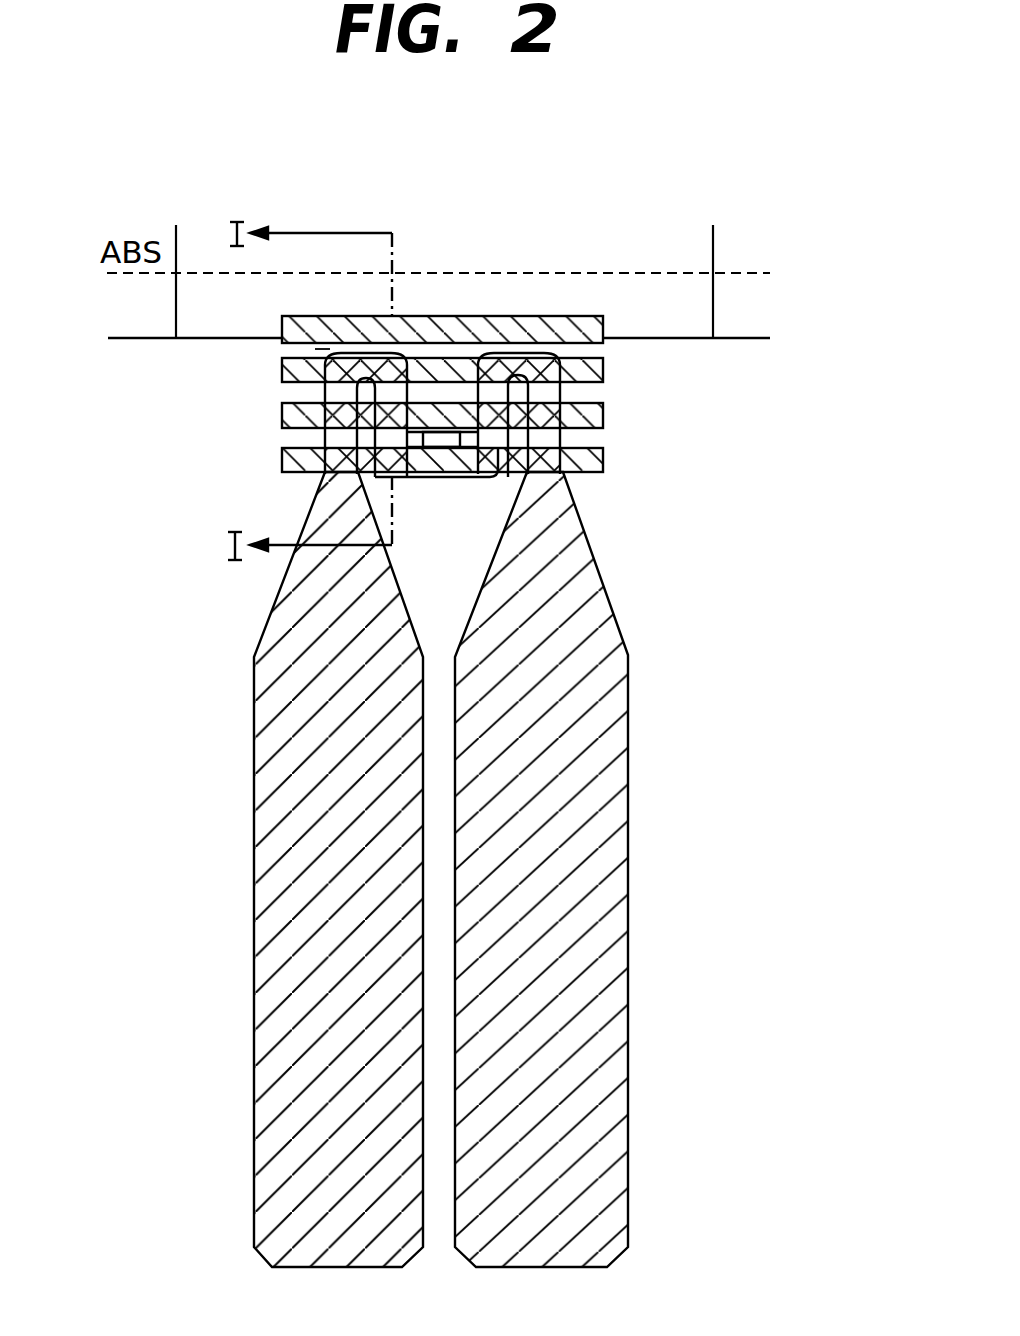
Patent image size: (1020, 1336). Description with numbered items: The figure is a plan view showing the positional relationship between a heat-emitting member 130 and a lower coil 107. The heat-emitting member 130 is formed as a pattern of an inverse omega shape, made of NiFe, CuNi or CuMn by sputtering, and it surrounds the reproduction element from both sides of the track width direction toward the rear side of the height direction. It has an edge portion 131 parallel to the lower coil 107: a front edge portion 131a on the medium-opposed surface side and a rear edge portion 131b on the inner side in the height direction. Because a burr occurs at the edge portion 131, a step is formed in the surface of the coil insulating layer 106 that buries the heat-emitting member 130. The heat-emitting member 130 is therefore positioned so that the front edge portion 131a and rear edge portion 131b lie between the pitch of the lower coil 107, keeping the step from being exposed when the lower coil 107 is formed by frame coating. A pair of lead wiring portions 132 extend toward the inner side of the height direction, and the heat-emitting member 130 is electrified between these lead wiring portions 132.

The coil insulating layer 106 is at (500, 260).
The lower coil 107 is at (603, 327).
The heat-emitting member 130 is at (460, 437).
The edge portion 131 is at (460, 453).
The front edge portion 131a is at (315, 348).
The rear edge portion 131b is at (450, 478).
The lead wiring portions 132 is at (265, 822).